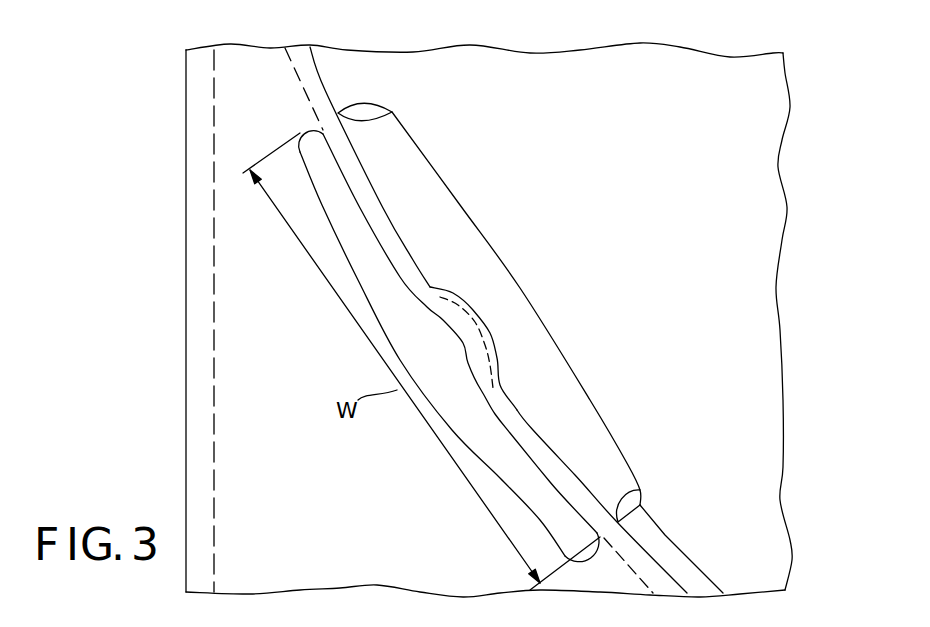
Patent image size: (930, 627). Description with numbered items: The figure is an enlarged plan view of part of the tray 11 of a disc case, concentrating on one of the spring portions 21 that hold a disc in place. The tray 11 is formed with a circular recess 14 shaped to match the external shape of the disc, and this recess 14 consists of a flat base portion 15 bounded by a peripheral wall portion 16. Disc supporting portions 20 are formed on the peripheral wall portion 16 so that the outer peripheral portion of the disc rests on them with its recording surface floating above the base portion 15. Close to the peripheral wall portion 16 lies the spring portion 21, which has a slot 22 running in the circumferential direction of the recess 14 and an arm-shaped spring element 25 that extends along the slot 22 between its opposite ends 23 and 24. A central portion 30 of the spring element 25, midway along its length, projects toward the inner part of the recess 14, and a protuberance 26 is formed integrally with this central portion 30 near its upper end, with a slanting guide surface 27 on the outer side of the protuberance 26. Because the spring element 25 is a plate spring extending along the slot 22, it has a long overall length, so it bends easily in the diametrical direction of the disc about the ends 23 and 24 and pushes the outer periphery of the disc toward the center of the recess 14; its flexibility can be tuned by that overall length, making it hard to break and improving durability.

The tray 11 is at (237, 355).
The circular recess 14 is at (741, 118).
The flat base portion 15 is at (750, 271).
The peripheral wall portion 16 is at (322, 78).
The disc supporting portion 20 is at (668, 552).
The spring portion 21 is at (509, 217).
The slot 22 is at (435, 212).
The end of slot 23 is at (392, 112).
The end of slot 24 is at (645, 487).
The spring element 25 is at (535, 432).
The protuberance 26 is at (487, 323).
The slanting guide surface 27 is at (460, 313).
The central portion 30 is at (490, 340).